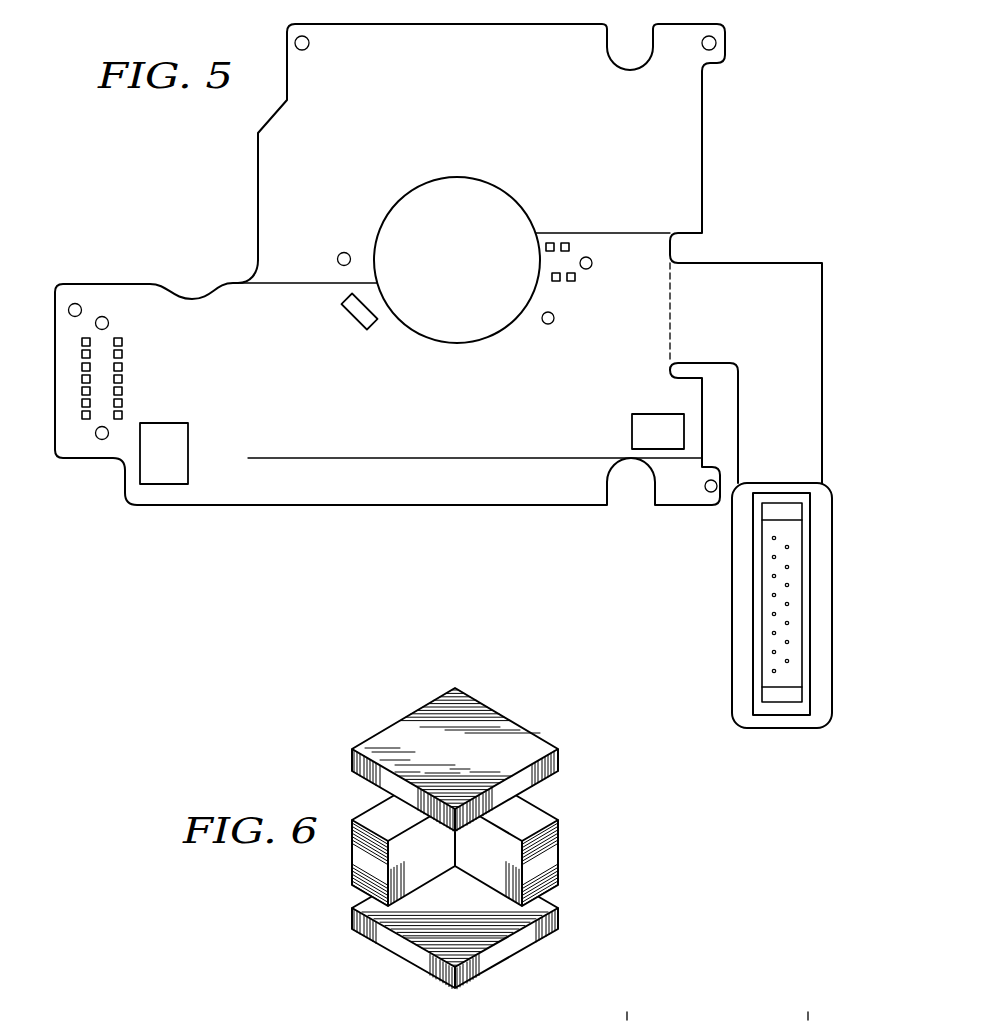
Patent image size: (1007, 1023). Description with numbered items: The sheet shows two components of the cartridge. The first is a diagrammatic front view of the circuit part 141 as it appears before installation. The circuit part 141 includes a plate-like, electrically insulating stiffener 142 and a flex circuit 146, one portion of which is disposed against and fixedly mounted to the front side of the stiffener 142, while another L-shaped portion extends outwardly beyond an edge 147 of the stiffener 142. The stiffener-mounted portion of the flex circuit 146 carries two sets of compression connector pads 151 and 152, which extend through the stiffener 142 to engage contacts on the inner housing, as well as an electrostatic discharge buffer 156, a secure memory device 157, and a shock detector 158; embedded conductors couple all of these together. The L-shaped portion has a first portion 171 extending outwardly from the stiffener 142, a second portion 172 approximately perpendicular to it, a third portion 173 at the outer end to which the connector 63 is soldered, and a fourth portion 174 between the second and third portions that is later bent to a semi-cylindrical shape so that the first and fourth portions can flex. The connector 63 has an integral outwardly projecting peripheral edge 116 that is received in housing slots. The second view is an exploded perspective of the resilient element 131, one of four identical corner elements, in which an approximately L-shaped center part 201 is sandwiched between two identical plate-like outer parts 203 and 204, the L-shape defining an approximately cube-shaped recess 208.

In FIG. 5, the circuit part 141 is at (743, 165).
In FIG. 5, the stiffener 142 is at (266, 172).
In FIG. 5, the flex circuit 146 is at (360, 441).
In FIG. 5, the edge 147 is at (671, 316).
In FIG. 5, the compression connector pads 151 is at (74, 438).
In FIG. 5, the compression connector pads 152 is at (590, 238).
In FIG. 5, the electrostatic discharge buffer 156 is at (165, 423).
In FIG. 5, the secure memory device 157 is at (630, 428).
In FIG. 5, the shock detector 158 is at (350, 322).
In FIG. 5, the first portion 171 is at (700, 279).
In FIG. 5, the second portion 172 is at (797, 322).
In FIG. 5, the third portion 173 is at (797, 388).
In FIG. 5, the fourth portion 174 is at (797, 462).
In FIG. 5, the connector 63 is at (832, 574).
In FIG. 5, the peripheral edge 116 is at (832, 645).
In FIG. 6, the resilient element 131 is at (479, 832).
In FIG. 6, the center part 201 is at (549, 863).
In FIG. 6, the outer part 203 is at (388, 740).
In FIG. 6, the outer part 204 is at (395, 948).
In FIG. 6, the recess 208 is at (485, 917).